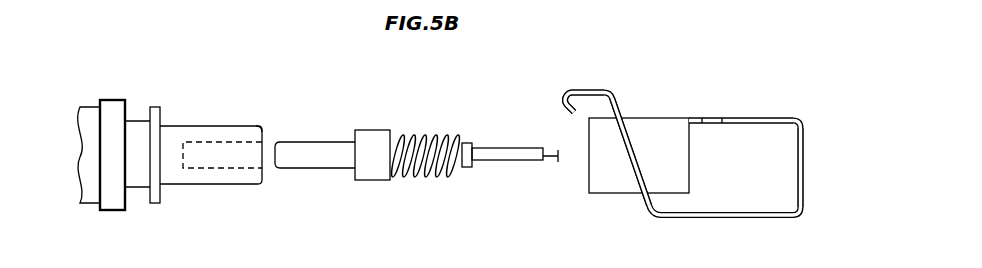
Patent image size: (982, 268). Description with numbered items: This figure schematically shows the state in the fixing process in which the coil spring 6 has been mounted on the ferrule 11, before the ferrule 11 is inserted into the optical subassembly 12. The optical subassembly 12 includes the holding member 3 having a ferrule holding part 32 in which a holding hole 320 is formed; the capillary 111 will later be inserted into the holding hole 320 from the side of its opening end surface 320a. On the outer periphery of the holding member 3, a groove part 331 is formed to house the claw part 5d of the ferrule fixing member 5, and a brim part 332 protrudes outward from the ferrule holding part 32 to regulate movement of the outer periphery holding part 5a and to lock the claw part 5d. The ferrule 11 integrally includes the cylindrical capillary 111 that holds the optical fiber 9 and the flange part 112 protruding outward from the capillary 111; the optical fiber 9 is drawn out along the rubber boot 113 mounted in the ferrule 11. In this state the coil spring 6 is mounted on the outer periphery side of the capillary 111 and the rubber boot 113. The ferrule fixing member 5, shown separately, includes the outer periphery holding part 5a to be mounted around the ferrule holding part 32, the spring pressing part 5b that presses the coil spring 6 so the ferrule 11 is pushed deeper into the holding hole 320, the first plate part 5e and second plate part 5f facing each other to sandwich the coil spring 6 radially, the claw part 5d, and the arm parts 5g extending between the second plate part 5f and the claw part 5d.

The optical subassembly 12 is at (88, 212).
The holding member 3 is at (172, 208).
The groove part 331 is at (137, 120).
The brim part 332 is at (153, 110).
The ferrule holding part 32 is at (213, 192).
The holding hole 320 is at (235, 158).
The opening end surface 320a is at (265, 130).
The ferrule 11 is at (460, 115).
The capillary 111 is at (325, 150).
The flange part 112 is at (372, 172).
The coil spring 6 is at (427, 138).
The rubber boot 113 is at (490, 157).
The optical fiber 9 is at (548, 160).
The ferrule fixing member 5 is at (788, 80).
The outer periphery holding part 5a is at (633, 125).
The spring pressing part 5b is at (802, 163).
The claw part 5d is at (566, 111).
The first plate part 5e is at (742, 120).
The second plate part 5f is at (720, 218).
The arm parts 5g is at (635, 170).